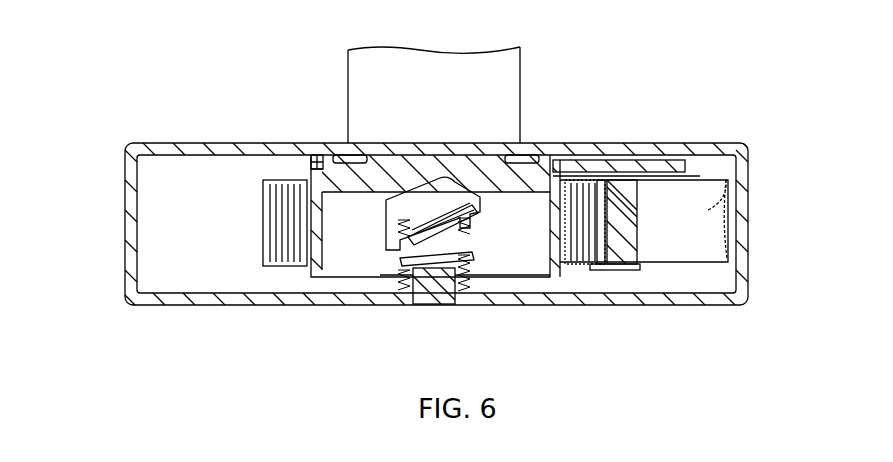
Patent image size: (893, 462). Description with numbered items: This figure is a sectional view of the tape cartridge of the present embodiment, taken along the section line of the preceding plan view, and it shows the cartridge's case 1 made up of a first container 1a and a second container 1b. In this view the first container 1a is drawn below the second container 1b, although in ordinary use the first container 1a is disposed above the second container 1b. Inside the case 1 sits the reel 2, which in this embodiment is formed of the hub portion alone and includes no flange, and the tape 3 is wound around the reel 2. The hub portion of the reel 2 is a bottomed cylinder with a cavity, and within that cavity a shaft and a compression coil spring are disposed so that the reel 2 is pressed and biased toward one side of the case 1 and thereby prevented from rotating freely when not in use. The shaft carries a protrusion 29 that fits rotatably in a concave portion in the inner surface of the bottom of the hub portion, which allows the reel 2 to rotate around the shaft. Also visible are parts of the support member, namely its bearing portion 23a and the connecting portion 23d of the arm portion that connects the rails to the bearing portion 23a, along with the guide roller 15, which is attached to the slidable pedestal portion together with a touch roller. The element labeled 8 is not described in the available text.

The case 1 is at (150, 103).
The first container 1a is at (124, 258).
The second container 1b is at (128, 190).
The reel 2 is at (298, 266).
The tape 3 is at (738, 210).
The operating post 8 is at (521, 82).
The guide roller 15 is at (625, 257).
The bearing portion 23a is at (317, 152).
The connecting portion 23d is at (652, 165).
The protrusion 29 is at (398, 220).